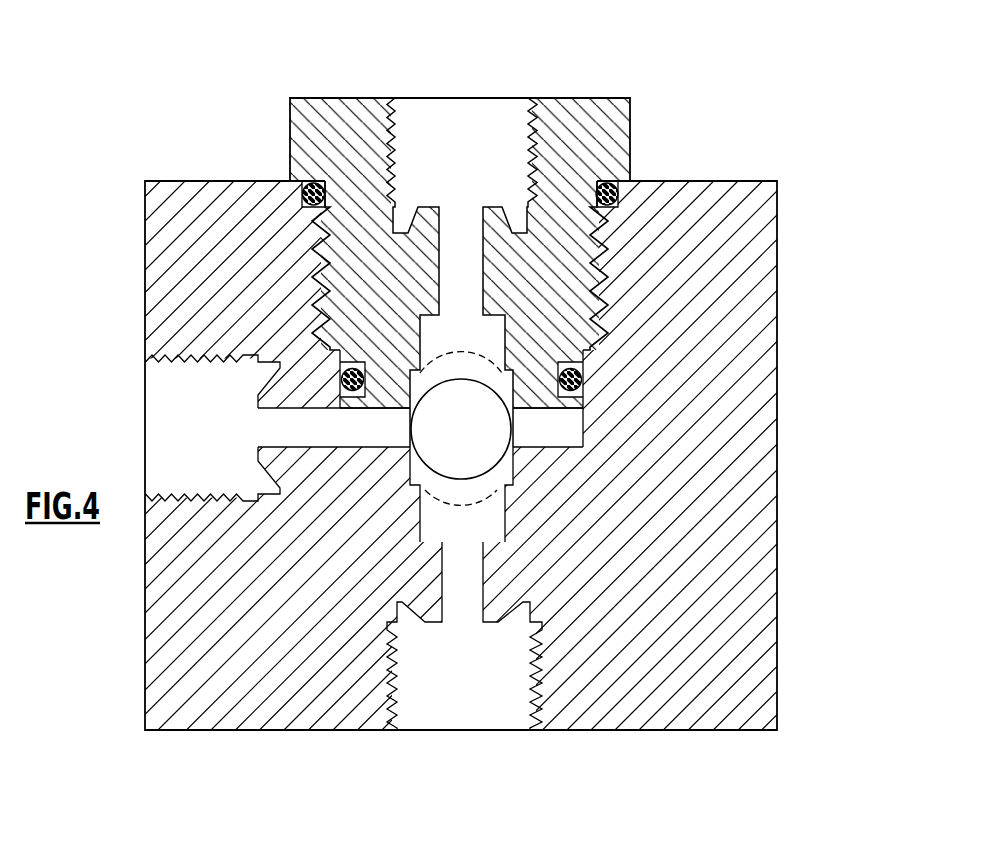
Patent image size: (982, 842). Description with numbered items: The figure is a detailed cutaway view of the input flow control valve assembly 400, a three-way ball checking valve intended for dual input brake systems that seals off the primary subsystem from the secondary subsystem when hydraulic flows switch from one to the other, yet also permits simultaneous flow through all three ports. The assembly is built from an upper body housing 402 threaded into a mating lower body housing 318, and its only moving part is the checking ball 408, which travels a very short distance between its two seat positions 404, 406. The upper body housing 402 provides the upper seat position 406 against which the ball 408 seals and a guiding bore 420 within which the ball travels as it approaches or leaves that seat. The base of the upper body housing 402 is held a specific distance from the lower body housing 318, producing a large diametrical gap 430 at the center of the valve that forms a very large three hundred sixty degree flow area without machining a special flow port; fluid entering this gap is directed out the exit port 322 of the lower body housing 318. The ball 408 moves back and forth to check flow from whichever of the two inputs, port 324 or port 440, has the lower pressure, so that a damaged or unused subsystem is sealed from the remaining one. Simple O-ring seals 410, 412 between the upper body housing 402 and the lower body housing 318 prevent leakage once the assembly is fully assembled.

The input flow control valve assembly 400 is at (806, 126).
The lower body housing 318 is at (168, 252).
The exit port 322 is at (167, 453).
The port 324 is at (466, 108).
The upper body housing 402 is at (330, 99).
The seat position 404 is at (422, 492).
The upper seat position 406 is at (500, 343).
The checking ball 408 is at (410, 430).
The O-ring seal 410 is at (584, 395).
The O-ring seal 412 is at (623, 193).
The guiding bore 420 is at (584, 363).
The large diametrical gap 430 is at (557, 430).
The port 440 is at (477, 722).